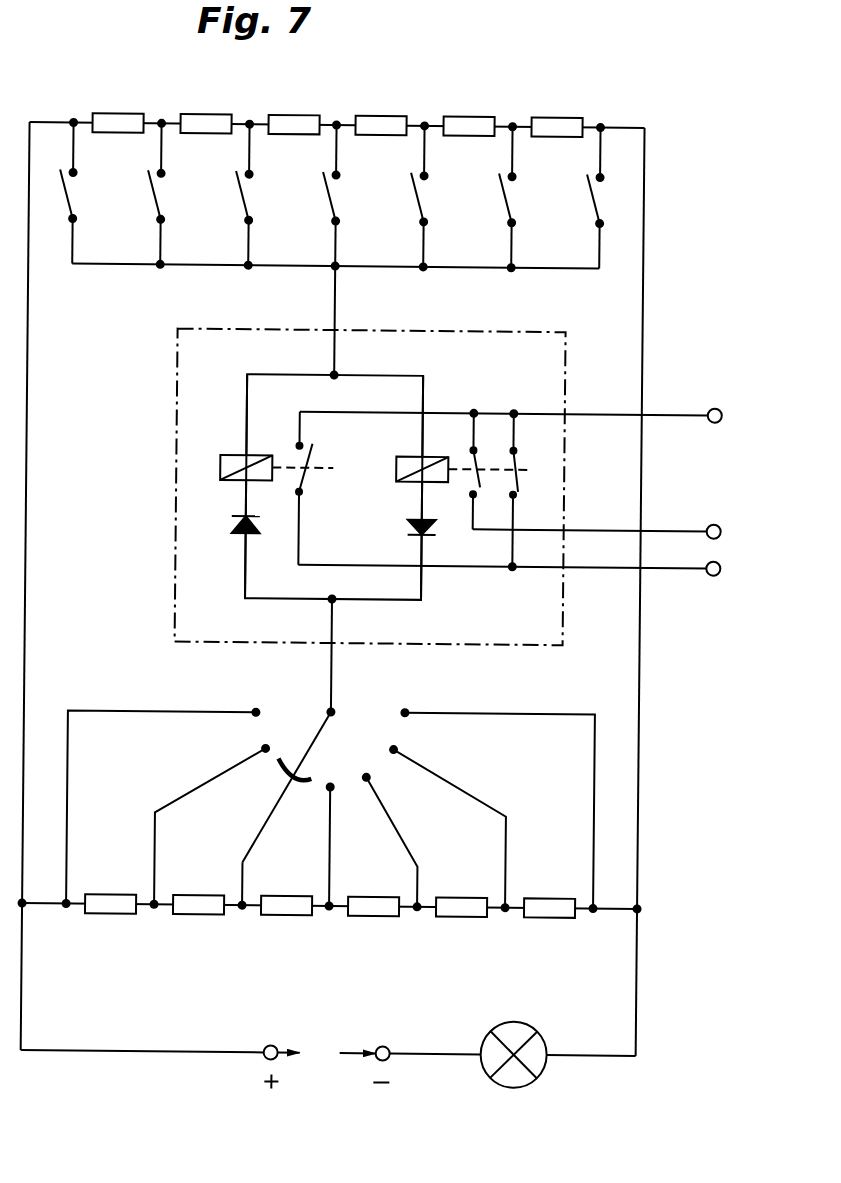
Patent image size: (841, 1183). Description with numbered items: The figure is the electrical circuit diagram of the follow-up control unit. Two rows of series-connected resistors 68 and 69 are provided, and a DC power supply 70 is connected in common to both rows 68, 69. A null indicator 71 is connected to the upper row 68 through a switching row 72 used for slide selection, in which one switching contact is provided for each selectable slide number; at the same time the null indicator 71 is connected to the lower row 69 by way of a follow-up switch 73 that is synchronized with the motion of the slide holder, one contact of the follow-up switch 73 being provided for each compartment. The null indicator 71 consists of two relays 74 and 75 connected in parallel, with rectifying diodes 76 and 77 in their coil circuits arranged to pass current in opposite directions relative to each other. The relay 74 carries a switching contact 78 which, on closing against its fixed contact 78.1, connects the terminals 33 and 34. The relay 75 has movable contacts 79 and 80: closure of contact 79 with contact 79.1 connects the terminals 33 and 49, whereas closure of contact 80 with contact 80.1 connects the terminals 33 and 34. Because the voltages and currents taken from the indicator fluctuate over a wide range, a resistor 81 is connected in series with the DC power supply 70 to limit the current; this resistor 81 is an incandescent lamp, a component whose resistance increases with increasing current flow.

The row of series-connected resistors 68 is at (395, 111).
The switching row 72 is at (603, 195).
The null indicator 71 is at (171, 412).
The relay 74 is at (225, 455).
The relay 75 is at (396, 472).
The rectifying diode 76 is at (237, 539).
The rectifying diode 77 is at (404, 530).
The switching contact 78 is at (318, 458).
The fixed contact 78.1 is at (296, 446).
The movable contact 79 is at (477, 481).
The contact 79.1 is at (468, 449).
The movable contact 80 is at (514, 493).
The contact 80.1 is at (508, 449).
The terminal 33 is at (701, 404).
The terminal 49 is at (709, 523).
The terminal 34 is at (710, 577).
The follow-up switch 73 is at (315, 745).
The row of series-connected resistors 69 is at (297, 923).
The DC power supply 70 is at (250, 1065).
The resistor 81 is at (524, 1030).